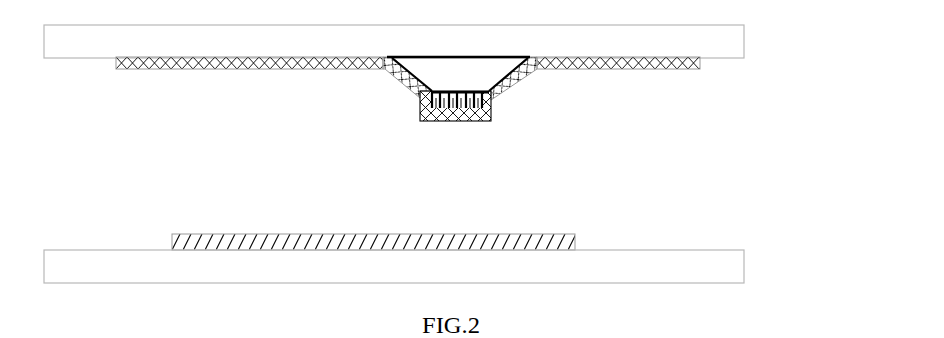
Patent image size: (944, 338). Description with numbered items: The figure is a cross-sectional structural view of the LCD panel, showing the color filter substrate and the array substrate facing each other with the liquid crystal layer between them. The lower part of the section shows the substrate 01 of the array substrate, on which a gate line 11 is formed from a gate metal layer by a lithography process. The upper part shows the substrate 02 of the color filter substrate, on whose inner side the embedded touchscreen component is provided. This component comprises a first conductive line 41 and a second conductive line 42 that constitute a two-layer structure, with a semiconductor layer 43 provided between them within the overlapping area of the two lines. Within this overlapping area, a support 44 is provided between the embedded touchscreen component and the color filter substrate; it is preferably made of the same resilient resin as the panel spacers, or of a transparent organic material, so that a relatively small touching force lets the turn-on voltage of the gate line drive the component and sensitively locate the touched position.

The substrate of the array substrate 01 is at (723, 267).
The substrate of the color filter substrate 02 is at (727, 38).
The gate line 11 is at (577, 242).
The first conductive line 41 is at (667, 63).
The second conductive line 42 is at (475, 122).
The semiconductor layer 43 is at (480, 103).
The support 44 is at (420, 64).